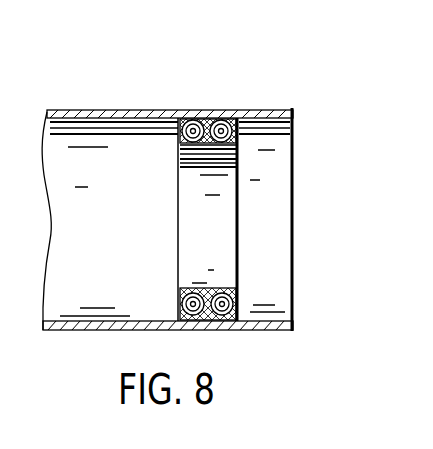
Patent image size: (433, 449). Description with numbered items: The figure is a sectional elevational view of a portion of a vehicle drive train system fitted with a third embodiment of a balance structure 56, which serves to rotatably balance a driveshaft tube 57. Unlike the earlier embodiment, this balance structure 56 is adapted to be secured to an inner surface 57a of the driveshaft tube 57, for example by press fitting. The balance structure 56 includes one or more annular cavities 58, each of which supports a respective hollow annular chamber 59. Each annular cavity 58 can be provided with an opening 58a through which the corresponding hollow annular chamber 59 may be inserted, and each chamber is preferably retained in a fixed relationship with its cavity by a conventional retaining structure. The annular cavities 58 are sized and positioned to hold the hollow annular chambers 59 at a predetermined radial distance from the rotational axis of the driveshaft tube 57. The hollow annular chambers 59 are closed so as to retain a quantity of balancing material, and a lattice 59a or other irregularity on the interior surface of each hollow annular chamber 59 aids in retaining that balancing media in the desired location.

The balance structure 56 is at (268, 216).
The driveshaft tube 57 is at (296, 80).
The inner surface 57a is at (268, 118).
The annular cavity 58 is at (219, 117).
The opening 58a is at (174, 130).
The hollow annular chamber 59 is at (143, 178).
The lattice 59a is at (178, 172).